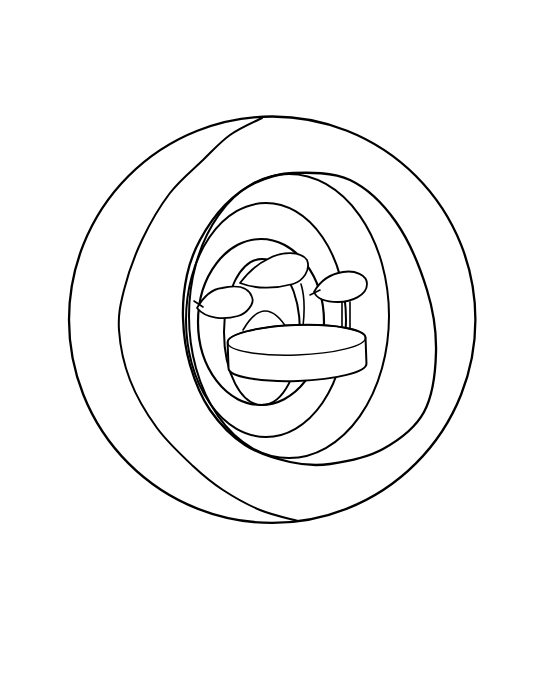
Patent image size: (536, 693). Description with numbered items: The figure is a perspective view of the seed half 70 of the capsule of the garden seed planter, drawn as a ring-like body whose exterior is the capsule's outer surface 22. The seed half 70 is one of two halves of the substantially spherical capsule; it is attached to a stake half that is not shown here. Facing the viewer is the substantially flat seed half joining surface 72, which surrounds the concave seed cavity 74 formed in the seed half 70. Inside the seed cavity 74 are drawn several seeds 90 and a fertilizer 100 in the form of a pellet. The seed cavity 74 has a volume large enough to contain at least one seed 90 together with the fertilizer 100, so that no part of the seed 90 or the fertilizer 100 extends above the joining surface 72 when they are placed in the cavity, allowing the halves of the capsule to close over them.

The seed half 70 is at (198, 92).
The outer surface 22 is at (118, 213).
The seed half joining surface 72 is at (313, 143).
The seed cavity 74 is at (308, 432).
The seed 90 is at (343, 282).
The fertilizer 100 is at (312, 338).